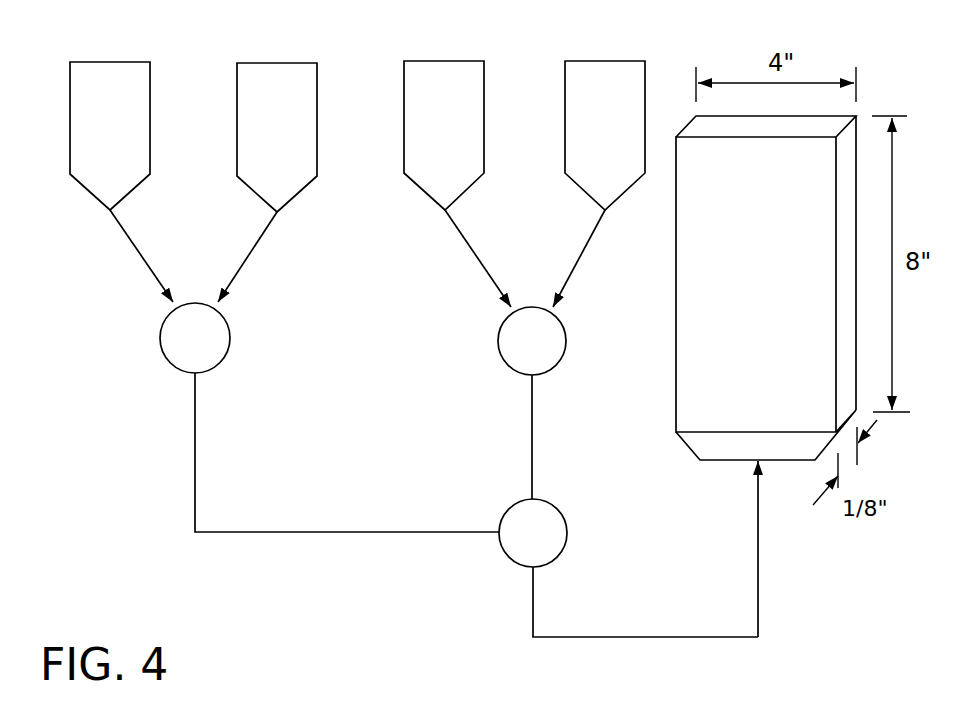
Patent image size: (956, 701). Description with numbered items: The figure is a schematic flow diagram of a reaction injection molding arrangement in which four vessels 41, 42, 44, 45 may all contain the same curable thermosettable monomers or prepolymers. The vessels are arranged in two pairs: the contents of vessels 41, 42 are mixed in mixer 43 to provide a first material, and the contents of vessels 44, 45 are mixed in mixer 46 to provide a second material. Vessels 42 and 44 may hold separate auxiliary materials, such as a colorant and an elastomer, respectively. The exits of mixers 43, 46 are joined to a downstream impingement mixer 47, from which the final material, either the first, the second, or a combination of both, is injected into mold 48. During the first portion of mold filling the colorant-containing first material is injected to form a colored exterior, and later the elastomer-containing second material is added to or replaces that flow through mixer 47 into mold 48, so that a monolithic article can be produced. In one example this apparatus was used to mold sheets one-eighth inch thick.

The vessel 41 is at (70, 108).
The vessel 42 is at (237, 77).
The mixer 43 is at (194, 303).
The vessel 44 is at (404, 93).
The vessel 45 is at (565, 95).
The mixer 46 is at (534, 307).
The mixer 47 is at (506, 508).
The mold 48 is at (676, 365).